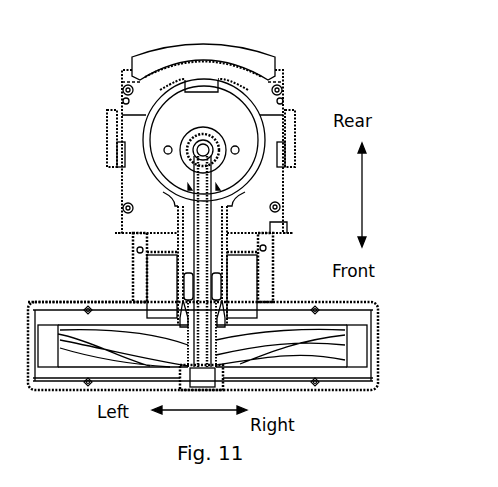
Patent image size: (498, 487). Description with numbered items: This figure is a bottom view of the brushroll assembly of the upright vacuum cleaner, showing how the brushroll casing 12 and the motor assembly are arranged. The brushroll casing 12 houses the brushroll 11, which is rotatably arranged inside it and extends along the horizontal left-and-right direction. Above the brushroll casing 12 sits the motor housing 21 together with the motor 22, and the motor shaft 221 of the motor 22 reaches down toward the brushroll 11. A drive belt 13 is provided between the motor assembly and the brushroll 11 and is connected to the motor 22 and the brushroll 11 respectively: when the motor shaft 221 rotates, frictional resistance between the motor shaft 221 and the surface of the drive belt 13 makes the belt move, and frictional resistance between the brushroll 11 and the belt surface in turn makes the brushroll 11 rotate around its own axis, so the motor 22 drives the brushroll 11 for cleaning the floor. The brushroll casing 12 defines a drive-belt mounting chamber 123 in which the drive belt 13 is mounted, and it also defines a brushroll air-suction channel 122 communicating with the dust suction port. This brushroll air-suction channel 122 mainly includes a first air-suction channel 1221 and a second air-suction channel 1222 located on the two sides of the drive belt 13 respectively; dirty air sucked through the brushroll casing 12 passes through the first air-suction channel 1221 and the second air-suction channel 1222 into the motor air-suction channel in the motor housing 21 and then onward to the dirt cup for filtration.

The brushroll 11 is at (255, 352).
The brushroll casing 12 is at (100, 383).
The drive belt 13 is at (205, 243).
The motor housing 21 is at (256, 62).
The motor 22 is at (218, 122).
The motor shaft 221 is at (214, 156).
The drive-belt mounting chamber 123 is at (213, 253).
The brushroll air-suction channel 122 is at (73, 250).
The second air-suction channel 1222 is at (165, 307).
The first air-suction channel 1221 is at (130, 325).